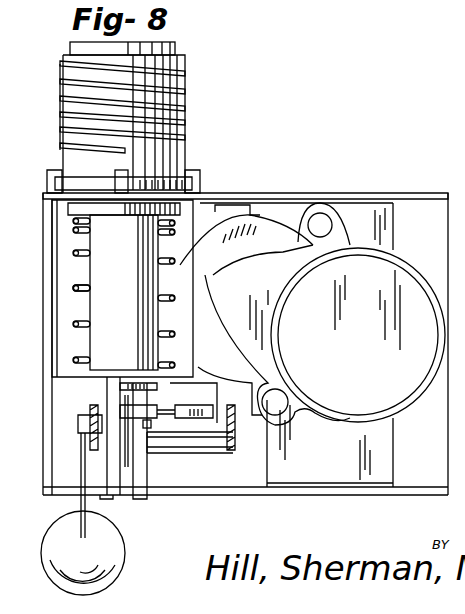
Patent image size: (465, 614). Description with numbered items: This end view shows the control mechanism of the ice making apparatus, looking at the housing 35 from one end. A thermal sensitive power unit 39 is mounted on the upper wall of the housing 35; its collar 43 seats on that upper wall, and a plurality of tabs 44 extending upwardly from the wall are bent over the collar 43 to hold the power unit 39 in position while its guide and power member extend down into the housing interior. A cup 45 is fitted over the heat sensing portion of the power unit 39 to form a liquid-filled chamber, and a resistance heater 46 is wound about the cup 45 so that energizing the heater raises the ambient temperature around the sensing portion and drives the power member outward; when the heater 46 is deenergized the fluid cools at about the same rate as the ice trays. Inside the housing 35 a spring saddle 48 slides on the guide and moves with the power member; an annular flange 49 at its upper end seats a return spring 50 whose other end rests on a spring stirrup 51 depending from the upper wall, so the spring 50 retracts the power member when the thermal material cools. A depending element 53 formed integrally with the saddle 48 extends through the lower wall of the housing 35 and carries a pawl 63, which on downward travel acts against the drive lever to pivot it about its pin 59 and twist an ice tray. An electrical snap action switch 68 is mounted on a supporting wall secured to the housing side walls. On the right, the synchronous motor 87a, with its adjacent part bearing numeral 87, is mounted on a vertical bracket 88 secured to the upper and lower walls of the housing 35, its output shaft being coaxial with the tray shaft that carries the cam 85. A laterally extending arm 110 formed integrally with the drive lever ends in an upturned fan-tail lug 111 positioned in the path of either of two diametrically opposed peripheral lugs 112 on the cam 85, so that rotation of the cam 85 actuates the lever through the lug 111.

The housing 35 is at (72, 197).
The thermal sensitive power unit 39 is at (212, 143).
The collar 43 is at (80, 183).
The tabs 44 is at (121, 175).
The cup 45 is at (186, 82).
The resistance heater 46 is at (60, 106).
The spring saddle 48 is at (90, 246).
The annular flange 49 is at (122, 210).
The return spring 50 is at (90, 286).
The spring stirrup 51 is at (52, 294).
The depending element 53 is at (118, 483).
The pin 59 is at (187, 441).
The pawl 63 is at (152, 424).
The electrical snap action switch 68 is at (201, 401).
The cam 85 is at (218, 208).
The cam 87 is at (265, 237).
The synchronous motor 87a is at (380, 303).
The vertical bracket 88 is at (345, 452).
The laterally extending arm 110 is at (166, 458).
The upturned fan-tail lug 111 is at (262, 414).
The peripheral lugs 112 is at (268, 200).